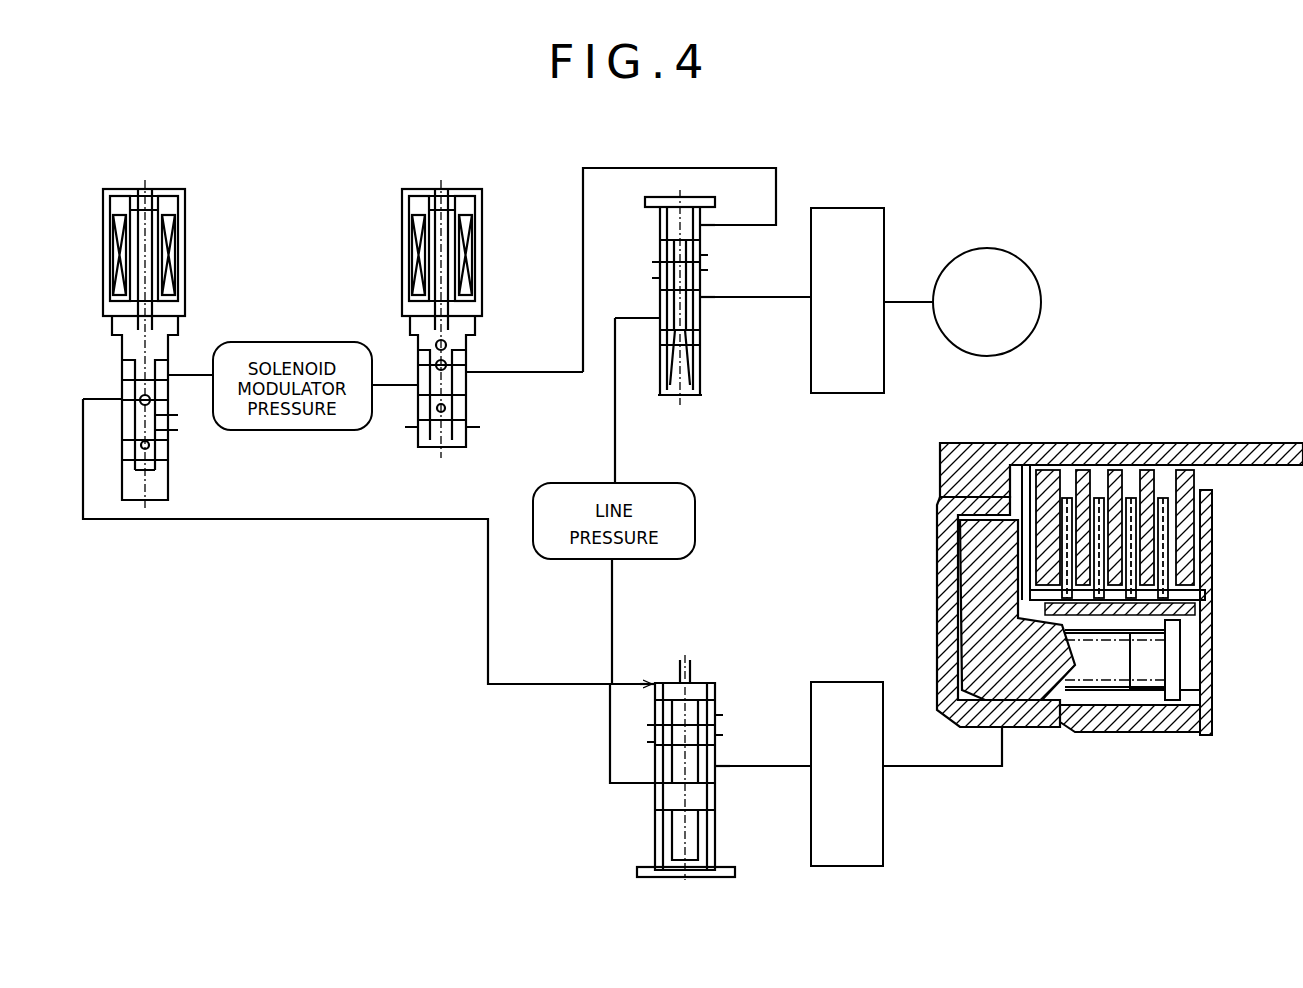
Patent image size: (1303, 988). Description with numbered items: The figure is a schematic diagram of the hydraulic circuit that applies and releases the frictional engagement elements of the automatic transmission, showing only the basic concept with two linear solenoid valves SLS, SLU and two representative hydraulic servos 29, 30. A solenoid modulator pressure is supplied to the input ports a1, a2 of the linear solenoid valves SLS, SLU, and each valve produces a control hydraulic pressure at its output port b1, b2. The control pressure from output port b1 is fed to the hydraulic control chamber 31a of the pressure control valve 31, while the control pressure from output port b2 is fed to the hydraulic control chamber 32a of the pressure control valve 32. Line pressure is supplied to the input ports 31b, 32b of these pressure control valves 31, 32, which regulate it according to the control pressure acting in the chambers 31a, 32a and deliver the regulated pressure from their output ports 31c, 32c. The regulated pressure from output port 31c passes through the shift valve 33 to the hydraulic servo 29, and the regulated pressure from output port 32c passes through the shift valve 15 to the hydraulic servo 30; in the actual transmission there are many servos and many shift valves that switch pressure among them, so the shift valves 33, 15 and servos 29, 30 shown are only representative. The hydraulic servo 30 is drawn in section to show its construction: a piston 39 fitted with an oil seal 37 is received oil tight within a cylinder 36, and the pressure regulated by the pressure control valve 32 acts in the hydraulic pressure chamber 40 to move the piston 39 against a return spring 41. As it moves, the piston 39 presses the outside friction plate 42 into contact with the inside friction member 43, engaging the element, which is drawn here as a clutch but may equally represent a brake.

The linear solenoid valve SLS is at (145, 172).
The linear solenoid valve SLU is at (443, 172).
The input port a1 is at (175, 372).
The output port b1 is at (95, 398).
The input port a2 is at (408, 378).
The output port b2 is at (495, 372).
The pressure control valve 31 is at (665, 195).
The hydraulic control chamber 31a is at (703, 215).
The input port 31b is at (615, 316).
The output port 31c is at (705, 300).
The pressure control valve 32 is at (703, 680).
The hydraulic control chamber 32a is at (663, 680).
The input port 32b is at (652, 780).
The output port 32c is at (715, 770).
The shift valve 33 is at (848, 207).
The shift valve 15 is at (847, 681).
The hydraulic servo 29 is at (987, 247).
The hydraulic servo 30 is at (978, 441).
The cylinder 36 is at (940, 512).
The oil seal 37 is at (1020, 468).
The piston 39 is at (955, 600).
The hydraulic pressure chamber 40 is at (946, 652).
The return spring 41 is at (1120, 690).
The outside friction plate 42 is at (1150, 480).
The inside friction member 43 is at (1098, 505).